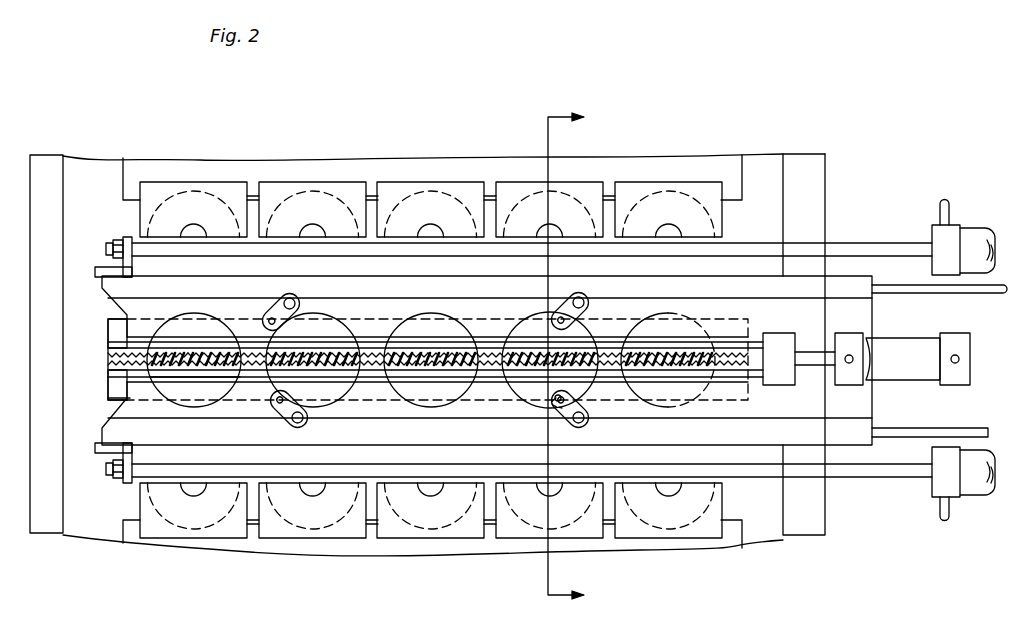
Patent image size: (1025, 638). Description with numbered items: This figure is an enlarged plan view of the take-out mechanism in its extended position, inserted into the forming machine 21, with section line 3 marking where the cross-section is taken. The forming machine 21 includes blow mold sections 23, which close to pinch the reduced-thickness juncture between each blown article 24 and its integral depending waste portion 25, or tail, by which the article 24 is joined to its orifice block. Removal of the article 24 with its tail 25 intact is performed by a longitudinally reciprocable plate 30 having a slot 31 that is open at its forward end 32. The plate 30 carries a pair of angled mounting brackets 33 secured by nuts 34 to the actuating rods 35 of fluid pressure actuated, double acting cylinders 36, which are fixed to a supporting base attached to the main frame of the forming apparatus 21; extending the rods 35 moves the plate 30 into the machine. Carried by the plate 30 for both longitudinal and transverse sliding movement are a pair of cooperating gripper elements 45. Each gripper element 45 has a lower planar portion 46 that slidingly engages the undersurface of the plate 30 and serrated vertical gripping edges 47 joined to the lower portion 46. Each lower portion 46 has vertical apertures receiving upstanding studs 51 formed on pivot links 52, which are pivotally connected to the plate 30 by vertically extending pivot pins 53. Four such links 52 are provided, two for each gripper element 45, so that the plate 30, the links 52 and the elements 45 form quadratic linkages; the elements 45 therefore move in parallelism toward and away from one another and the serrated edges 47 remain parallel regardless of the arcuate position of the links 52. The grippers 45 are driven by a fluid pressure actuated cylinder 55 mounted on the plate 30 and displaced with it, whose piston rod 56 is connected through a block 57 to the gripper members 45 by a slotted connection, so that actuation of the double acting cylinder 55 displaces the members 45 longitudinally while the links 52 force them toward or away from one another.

The section line 3- 3 is at (545, 359).
The forming mechanism 21 is at (828, 191).
The blow mold sections 23 is at (718, 208).
The article 24 is at (426, 316).
The waste portion 25 is at (346, 368).
The reciprocable plate 30 is at (850, 312).
The slot 31 is at (188, 374).
The open forward end of slot 32 is at (125, 396).
The angled mounting brackets 33 is at (125, 238).
The nuts 34 is at (106, 250).
The actuating rods 35 is at (856, 252).
The double acting cylinders 36 is at (972, 236).
The gripper elements 45 is at (88, 384).
The lower planar portion 46 is at (115, 388).
The serrated vertical gripping edges 47 is at (116, 357).
The studs 51 is at (570, 394).
The pivot links 52 is at (562, 409).
The pivot pins 53 is at (583, 422).
The fluid pressure actuated cylinder 55 is at (912, 372).
The piston rod 56 is at (811, 368).
The block 57 is at (771, 334).